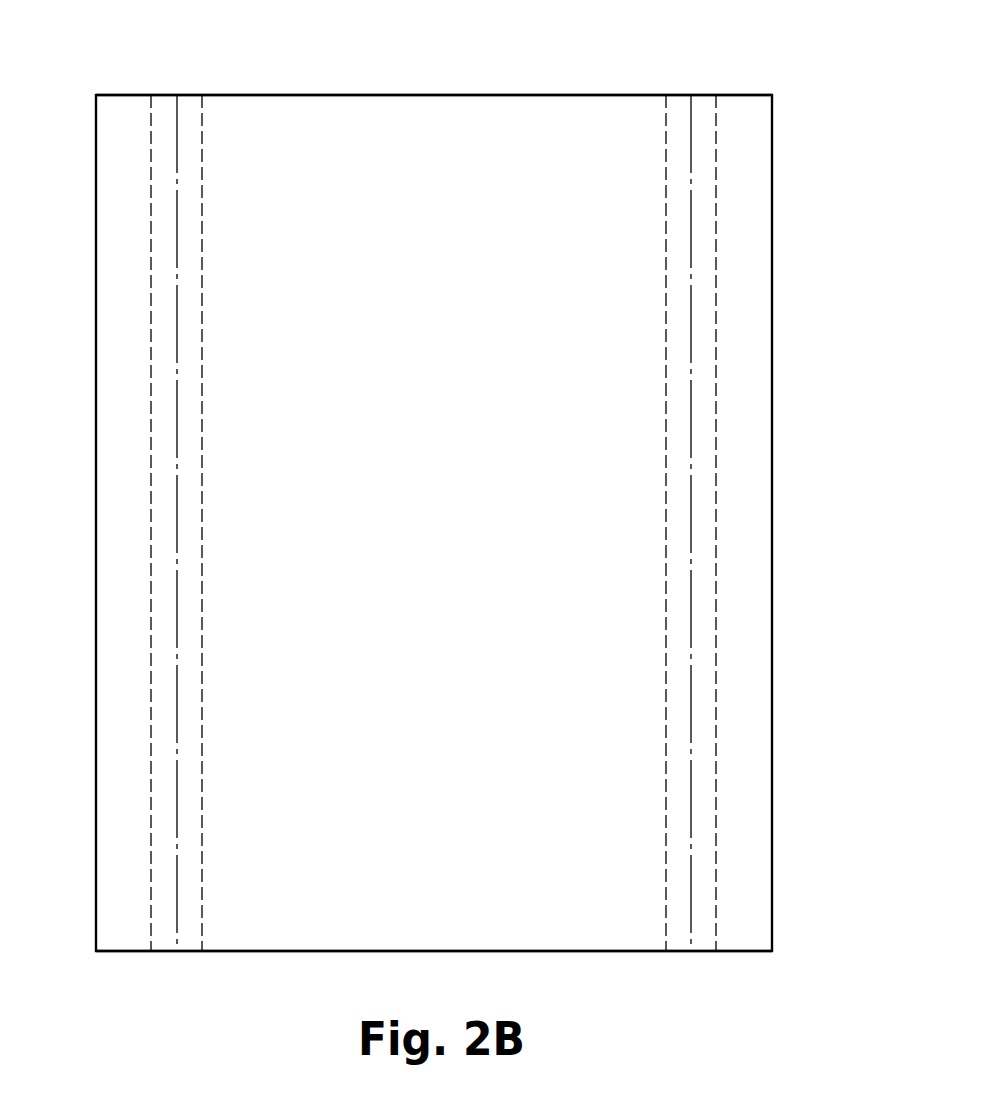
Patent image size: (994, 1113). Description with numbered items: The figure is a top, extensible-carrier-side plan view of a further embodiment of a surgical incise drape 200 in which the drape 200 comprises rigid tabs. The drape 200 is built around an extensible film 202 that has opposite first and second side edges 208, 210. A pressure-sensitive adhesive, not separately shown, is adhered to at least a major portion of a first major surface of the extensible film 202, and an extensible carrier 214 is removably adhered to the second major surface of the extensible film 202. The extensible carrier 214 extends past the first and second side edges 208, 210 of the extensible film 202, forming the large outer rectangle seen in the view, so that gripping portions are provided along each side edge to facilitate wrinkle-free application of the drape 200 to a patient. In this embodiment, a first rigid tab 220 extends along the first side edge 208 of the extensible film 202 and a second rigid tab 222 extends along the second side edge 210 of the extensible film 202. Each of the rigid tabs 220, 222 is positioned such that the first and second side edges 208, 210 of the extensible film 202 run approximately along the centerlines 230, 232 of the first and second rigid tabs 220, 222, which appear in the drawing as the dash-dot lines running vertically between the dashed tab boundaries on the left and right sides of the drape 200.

The surgical incise drape 200 is at (640, 51).
The extensible carrier 214 is at (122, 95).
The extensible film 202 is at (453, 612).
The second rigid tab 222 is at (150, 242).
The centerline of second rigid tab 232 is at (177, 413).
The second side edge 210 is at (177, 663).
The first rigid tab 220 is at (716, 231).
The centerline of first rigid tab 230 is at (691, 382).
The first side edge 208 is at (691, 680).